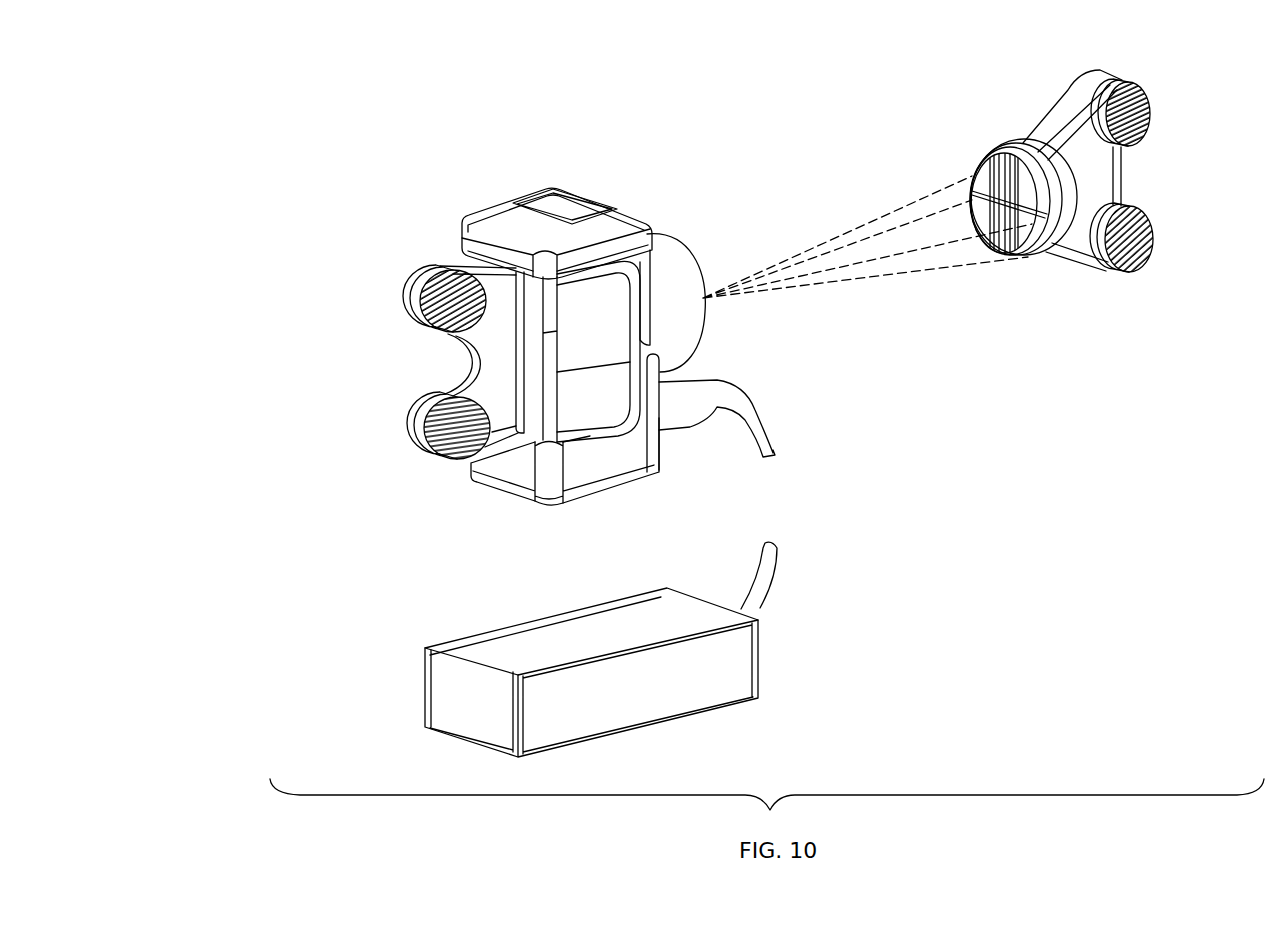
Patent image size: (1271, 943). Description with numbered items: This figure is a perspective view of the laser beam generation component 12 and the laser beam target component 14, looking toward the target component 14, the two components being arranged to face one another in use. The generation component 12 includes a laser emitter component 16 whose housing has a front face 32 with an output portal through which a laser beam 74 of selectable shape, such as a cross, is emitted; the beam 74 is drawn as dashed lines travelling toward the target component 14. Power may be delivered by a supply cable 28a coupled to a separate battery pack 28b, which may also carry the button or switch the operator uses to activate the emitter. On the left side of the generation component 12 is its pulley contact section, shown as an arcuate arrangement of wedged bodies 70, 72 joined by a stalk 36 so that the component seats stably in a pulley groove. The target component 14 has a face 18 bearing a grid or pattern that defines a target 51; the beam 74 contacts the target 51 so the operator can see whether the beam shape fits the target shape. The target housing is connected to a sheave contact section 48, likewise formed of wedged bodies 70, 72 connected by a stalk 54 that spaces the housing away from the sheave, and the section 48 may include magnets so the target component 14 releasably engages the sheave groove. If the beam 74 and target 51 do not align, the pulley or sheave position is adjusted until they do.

The laser beam generation component 12 is at (581, 174).
The laser beam target component 14 is at (1047, 171).
The laser emitter component 16 is at (492, 205).
The face 18 is at (1027, 238).
The supply cable 28a is at (773, 563).
The battery pack 28b is at (745, 667).
The front face 32 is at (692, 262).
The stalk 36 is at (480, 358).
The sheave contact section 48 is at (1056, 82).
The target 51 is at (975, 176).
The stalk 54 is at (1107, 175).
The electrode pad 70 is at (427, 306).
The second wedged body 72 is at (430, 433).
The laser beam 74 is at (844, 237).